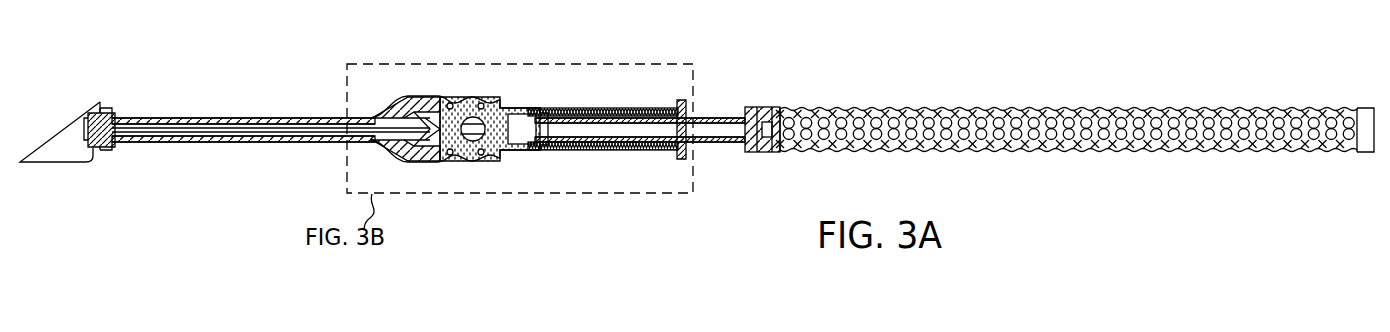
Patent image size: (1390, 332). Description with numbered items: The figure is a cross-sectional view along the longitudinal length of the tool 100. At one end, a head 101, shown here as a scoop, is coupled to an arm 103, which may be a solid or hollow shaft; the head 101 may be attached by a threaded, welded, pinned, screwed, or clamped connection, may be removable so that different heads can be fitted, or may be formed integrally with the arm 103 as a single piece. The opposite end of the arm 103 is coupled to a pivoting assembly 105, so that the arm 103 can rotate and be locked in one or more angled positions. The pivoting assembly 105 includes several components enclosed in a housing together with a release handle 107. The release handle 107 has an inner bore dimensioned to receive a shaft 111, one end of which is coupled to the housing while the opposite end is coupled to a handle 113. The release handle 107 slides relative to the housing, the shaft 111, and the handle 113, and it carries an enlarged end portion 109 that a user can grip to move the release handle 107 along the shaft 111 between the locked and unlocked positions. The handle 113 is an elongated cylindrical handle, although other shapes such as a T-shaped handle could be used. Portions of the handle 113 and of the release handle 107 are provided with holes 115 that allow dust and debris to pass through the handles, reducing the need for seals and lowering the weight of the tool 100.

The tool 100 is at (166, 62).
The head 101 is at (78, 138).
The arm 103 is at (231, 118).
The pivoting assembly 105 is at (477, 72).
The release handle 107 is at (600, 108).
The enlarged end portion 109 is at (681, 100).
The shaft 111 is at (714, 118).
The handle 113 is at (985, 108).
The holes 115 is at (1160, 118).